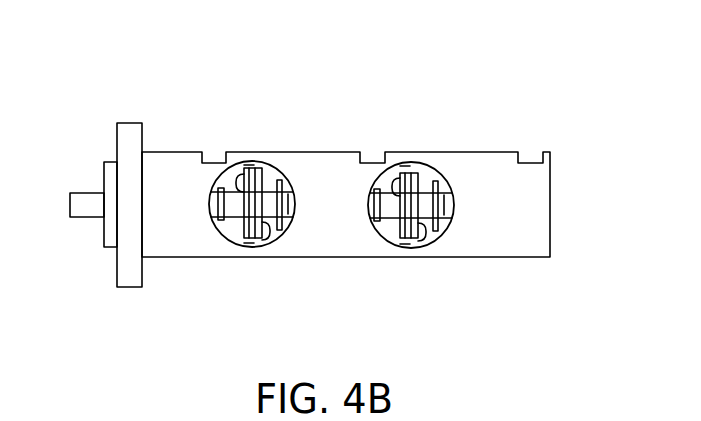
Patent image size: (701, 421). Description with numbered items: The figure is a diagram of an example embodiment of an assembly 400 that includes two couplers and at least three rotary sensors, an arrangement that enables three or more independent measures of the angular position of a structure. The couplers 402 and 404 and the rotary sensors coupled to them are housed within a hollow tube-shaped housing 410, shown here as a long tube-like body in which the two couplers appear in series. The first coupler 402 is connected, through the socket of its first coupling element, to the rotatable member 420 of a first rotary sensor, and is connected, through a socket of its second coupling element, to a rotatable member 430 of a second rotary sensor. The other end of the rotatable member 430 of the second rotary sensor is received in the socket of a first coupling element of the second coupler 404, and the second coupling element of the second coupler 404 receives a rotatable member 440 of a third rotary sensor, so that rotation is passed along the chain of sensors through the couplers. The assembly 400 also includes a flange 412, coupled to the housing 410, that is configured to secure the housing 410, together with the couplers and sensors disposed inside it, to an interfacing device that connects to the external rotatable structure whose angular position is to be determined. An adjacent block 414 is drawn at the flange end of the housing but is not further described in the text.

The assembly 400 is at (464, 60).
The coupler 402 is at (262, 165).
The second coupler 404 is at (405, 166).
The housing 410 is at (507, 150).
The flange 412 is at (129, 288).
The hub block 414 is at (108, 162).
The rotatable member 420 is at (82, 218).
The rotatable member 430 is at (283, 230).
The rotatable member 440 is at (447, 200).